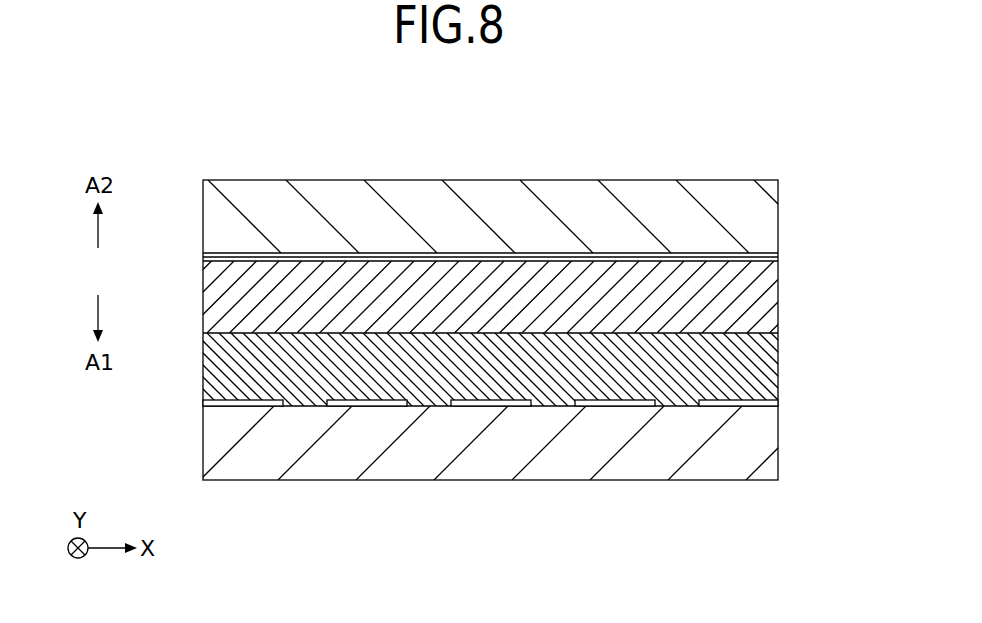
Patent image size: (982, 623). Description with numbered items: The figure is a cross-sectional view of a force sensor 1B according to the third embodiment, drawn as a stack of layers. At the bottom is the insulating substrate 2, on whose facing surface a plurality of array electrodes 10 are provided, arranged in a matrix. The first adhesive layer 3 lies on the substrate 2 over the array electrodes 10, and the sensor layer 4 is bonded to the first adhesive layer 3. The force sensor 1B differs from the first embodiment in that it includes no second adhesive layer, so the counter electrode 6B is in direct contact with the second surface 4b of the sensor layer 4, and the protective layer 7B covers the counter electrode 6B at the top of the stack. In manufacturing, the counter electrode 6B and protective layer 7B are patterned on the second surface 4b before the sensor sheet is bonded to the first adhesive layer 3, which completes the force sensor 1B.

The force sensor 1B is at (774, 132).
The substrate 2 is at (768, 445).
The first adhesive layer 3 is at (762, 350).
The sensor layer 4 is at (768, 312).
The second surface of the sensor layer 4b is at (232, 254).
The counter electrode 6B is at (758, 266).
The protective layer 7B is at (768, 215).
The array electrodes 10 is at (222, 401).